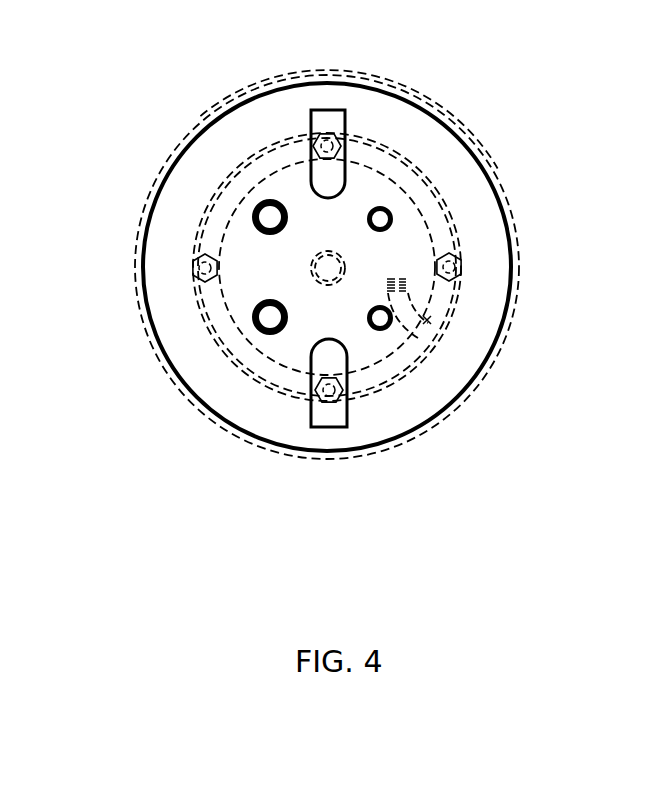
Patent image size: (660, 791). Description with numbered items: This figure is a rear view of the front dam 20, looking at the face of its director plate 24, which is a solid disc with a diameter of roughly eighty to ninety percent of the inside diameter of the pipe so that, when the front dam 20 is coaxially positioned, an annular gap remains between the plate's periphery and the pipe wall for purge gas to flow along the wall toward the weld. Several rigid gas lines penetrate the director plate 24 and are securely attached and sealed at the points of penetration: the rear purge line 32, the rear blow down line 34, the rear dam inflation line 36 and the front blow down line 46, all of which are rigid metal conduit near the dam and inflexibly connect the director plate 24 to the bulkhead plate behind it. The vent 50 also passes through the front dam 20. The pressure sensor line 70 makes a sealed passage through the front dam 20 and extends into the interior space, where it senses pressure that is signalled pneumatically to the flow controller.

The front dam 20 is at (327, 291).
The director plate 24 is at (405, 250).
The rear purge line 32 is at (174, 191).
The rear blow down line 34 is at (251, 322).
The rear dam inflation line 36 is at (463, 366).
The front blow down line 46 is at (262, 431).
The vent 50 is at (253, 115).
The pressure sensor line 70 is at (427, 131).